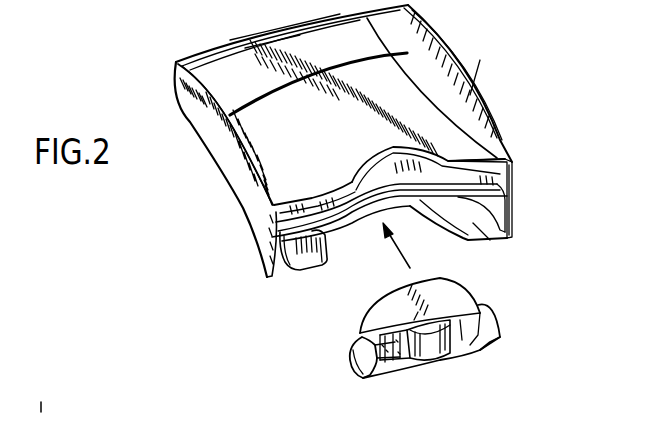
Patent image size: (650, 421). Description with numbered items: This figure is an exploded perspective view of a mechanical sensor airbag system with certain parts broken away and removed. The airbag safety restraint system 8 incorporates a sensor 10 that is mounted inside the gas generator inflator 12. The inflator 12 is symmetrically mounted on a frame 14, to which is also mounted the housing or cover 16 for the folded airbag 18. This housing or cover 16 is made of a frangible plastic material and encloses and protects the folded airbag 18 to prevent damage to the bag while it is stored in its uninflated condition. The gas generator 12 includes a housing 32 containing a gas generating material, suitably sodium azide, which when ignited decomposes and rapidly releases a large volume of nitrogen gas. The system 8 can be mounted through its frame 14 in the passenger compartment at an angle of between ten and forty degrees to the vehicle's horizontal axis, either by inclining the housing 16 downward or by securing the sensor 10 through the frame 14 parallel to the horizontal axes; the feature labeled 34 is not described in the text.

The airbag safety restraint system 8 is at (212, 220).
The housing or cover 16 is at (460, 80).
The folded airbag 18 is at (514, 173).
The frame 14 is at (473, 223).
The housing 32 is at (387, 310).
The gas generator inflator 12 is at (495, 314).
The sensor 10 is at (447, 362).
The slots 34 is at (402, 366).